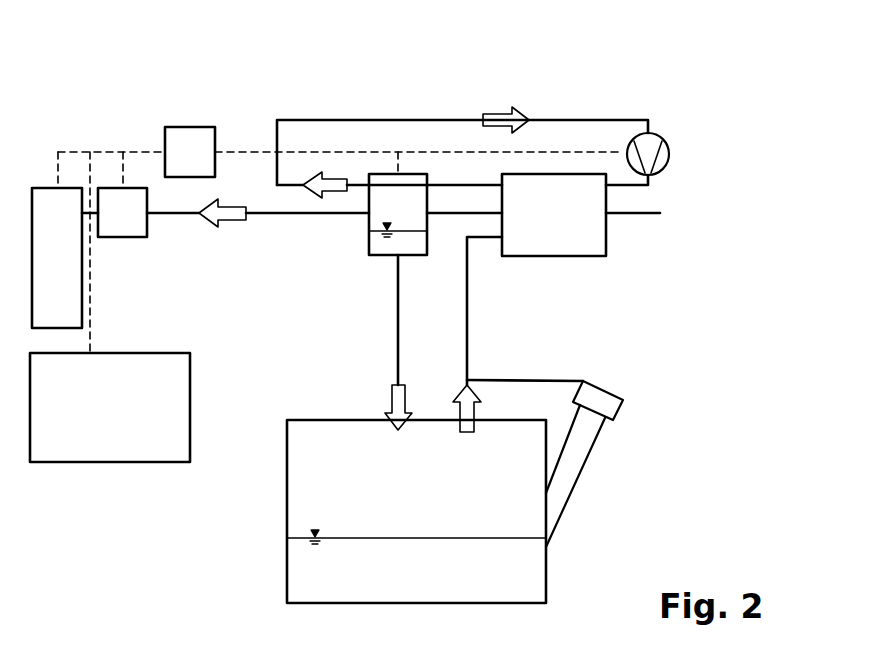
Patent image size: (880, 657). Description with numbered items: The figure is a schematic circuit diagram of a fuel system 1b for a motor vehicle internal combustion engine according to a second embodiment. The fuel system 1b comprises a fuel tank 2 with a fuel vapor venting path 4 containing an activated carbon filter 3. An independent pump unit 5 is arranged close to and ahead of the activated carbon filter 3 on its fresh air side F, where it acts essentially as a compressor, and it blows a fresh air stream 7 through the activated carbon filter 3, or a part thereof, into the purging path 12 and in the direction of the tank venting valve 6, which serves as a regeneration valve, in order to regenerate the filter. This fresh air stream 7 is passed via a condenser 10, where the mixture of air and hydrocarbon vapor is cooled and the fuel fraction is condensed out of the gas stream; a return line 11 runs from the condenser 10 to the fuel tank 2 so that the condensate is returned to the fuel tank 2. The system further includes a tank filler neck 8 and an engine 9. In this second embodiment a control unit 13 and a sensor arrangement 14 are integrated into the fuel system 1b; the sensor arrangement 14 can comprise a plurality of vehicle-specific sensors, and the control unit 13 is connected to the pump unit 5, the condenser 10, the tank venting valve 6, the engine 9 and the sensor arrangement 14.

The fuel system 1b is at (602, 88).
The fuel tank 2 is at (287, 487).
The activated carbon filter 3 is at (606, 235).
The fuel vapor venting path 4 is at (467, 312).
The pump unit 5 is at (659, 136).
The tank venting valve 6 is at (122, 237).
The fresh air stream 7 is at (388, 120).
The tank filler neck 8 is at (587, 464).
The engine 9 is at (40, 188).
The condenser 10 is at (369, 246).
The return line 11 is at (398, 352).
The purging path 12 is at (263, 213).
The control unit 13 is at (190, 127).
The sensor arrangement 14 is at (110, 462).
The fresh air side F is at (663, 212).